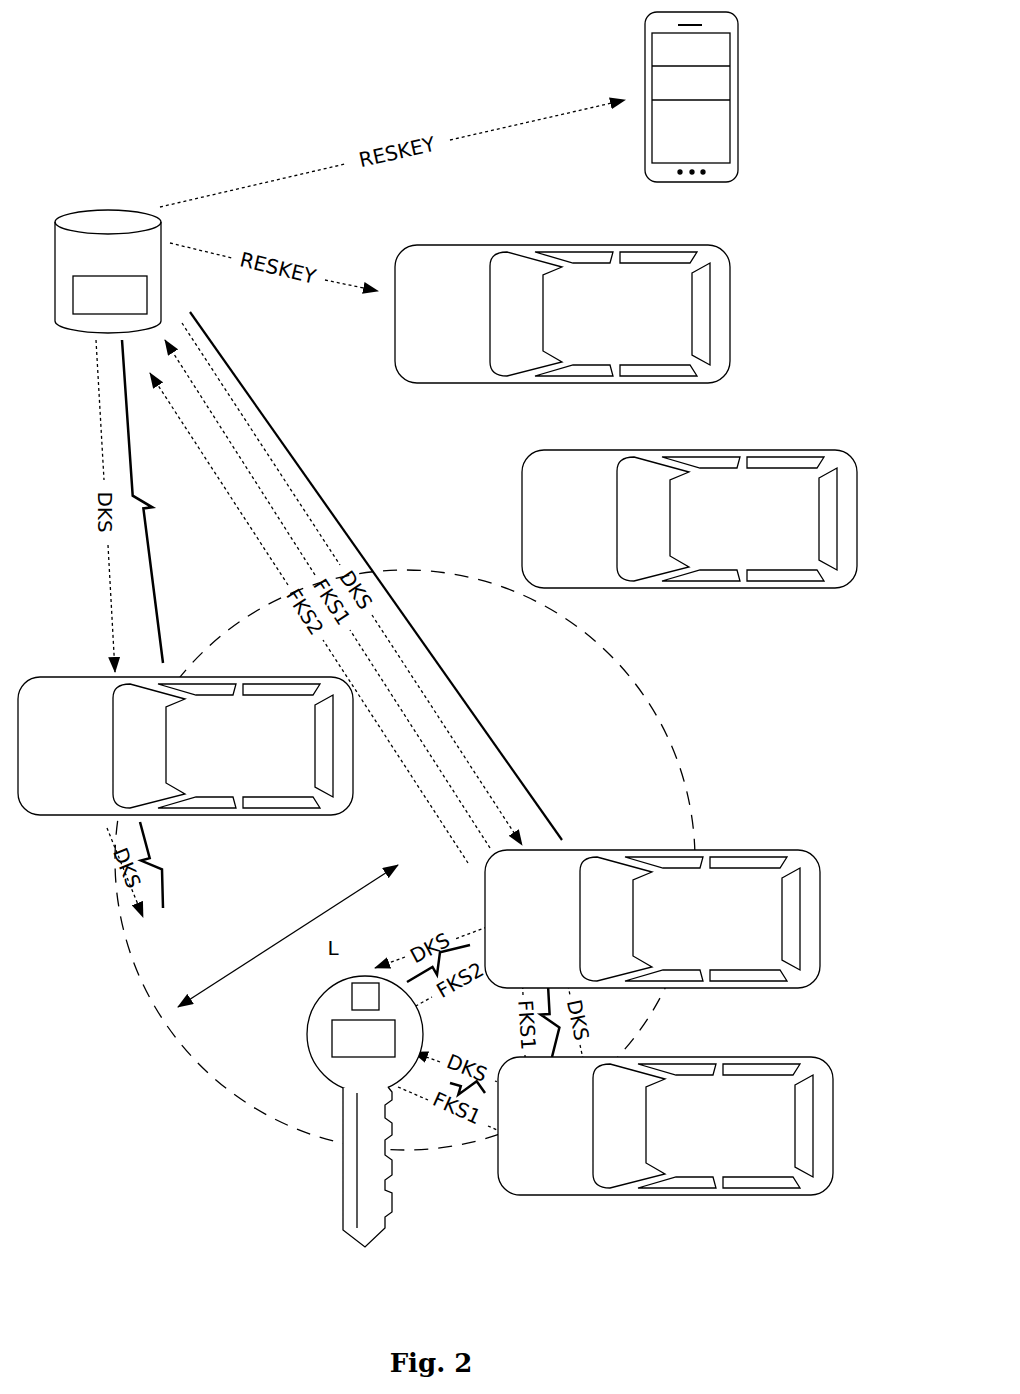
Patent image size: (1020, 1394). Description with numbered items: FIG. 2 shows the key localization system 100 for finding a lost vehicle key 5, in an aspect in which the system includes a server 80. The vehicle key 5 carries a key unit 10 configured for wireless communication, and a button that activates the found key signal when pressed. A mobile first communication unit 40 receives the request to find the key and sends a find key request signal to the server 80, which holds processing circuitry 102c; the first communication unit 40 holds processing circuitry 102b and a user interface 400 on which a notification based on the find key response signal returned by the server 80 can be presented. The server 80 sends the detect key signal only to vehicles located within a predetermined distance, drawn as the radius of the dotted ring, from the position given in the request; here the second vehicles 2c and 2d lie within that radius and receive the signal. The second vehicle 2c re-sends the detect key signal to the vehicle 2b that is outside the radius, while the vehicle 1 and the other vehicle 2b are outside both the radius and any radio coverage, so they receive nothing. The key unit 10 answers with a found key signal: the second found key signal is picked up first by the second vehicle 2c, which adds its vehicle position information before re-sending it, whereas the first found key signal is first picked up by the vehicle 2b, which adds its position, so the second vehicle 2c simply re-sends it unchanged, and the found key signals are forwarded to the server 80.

The key localization system 100 is at (108, 105).
The server 80 is at (108, 271).
The processing circuitry 102c is at (110, 295).
The first communication unit 40 is at (691, 97).
The processing circuitry 102b is at (691, 86).
The user interface 400 is at (691, 134).
The vehicle 1 is at (562, 314).
The vehicle 2b is at (677, 822).
The second vehicle 2c is at (652, 919).
The second vehicle 2d is at (185, 746).
The vehicle key 5 is at (389, 1111).
The key unit 10 is at (363, 1038).